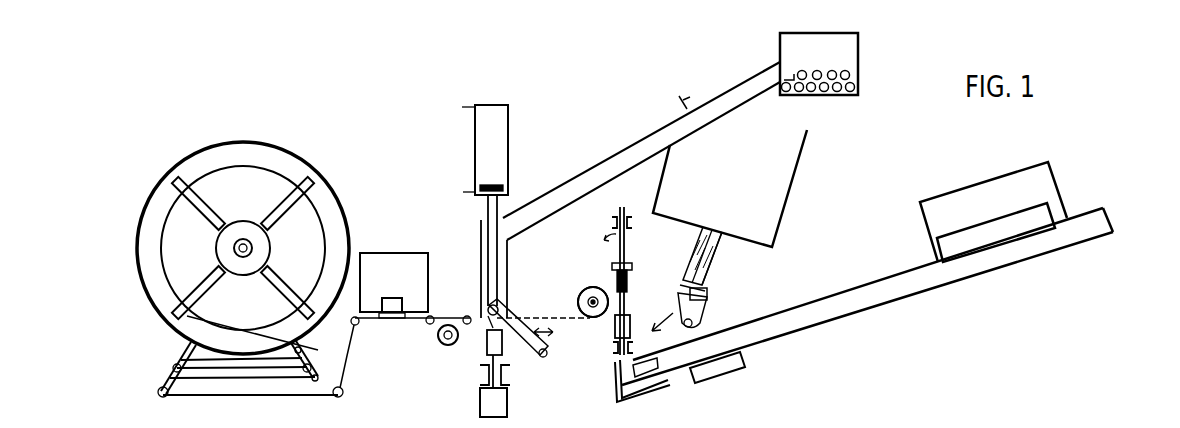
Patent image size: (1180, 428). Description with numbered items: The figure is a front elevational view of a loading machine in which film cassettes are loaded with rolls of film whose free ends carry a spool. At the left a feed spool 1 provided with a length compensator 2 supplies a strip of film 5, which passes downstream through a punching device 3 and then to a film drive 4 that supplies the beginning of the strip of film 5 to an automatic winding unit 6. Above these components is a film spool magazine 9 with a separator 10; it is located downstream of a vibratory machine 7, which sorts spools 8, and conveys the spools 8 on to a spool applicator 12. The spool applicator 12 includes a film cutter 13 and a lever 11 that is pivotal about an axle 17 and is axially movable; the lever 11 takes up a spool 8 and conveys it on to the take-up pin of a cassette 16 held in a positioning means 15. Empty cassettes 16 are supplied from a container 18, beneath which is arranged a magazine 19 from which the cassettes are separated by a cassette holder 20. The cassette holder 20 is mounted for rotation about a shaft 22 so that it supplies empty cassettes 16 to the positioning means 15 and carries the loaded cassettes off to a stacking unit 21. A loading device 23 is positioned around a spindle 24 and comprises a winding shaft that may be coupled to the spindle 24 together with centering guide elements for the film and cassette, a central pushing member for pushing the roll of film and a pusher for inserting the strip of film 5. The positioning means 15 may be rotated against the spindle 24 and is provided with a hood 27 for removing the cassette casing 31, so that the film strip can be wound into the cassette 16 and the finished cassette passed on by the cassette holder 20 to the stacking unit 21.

The feed spool 1 is at (198, 163).
The length compensator 2 is at (323, 350).
The punching device 3 is at (393, 324).
The film drive 4 is at (445, 345).
The strip of film 5 is at (350, 372).
The automatic winding unit 6 is at (593, 288).
The vibratory machine 7 is at (851, 50).
The spools 8 is at (851, 78).
The film spool magazine 9 is at (633, 150).
The separator 10 is at (508, 205).
The lever 11 is at (522, 343).
The spool applicator 12 is at (493, 343).
The film cutter 13 is at (487, 322).
The positioning means 15 is at (615, 340).
The cassette 16 is at (718, 258).
The axle 17 is at (544, 358).
The container 18 is at (679, 96).
The magazine 19 is at (700, 238).
The cassette holder 20 is at (710, 297).
The stacking unit 21 is at (806, 337).
The shaft 22 is at (700, 313).
The loading device 23 is at (580, 353).
The spindle 24 is at (578, 303).
The hood 27 is at (612, 266).
The cassette casing 31 is at (633, 283).